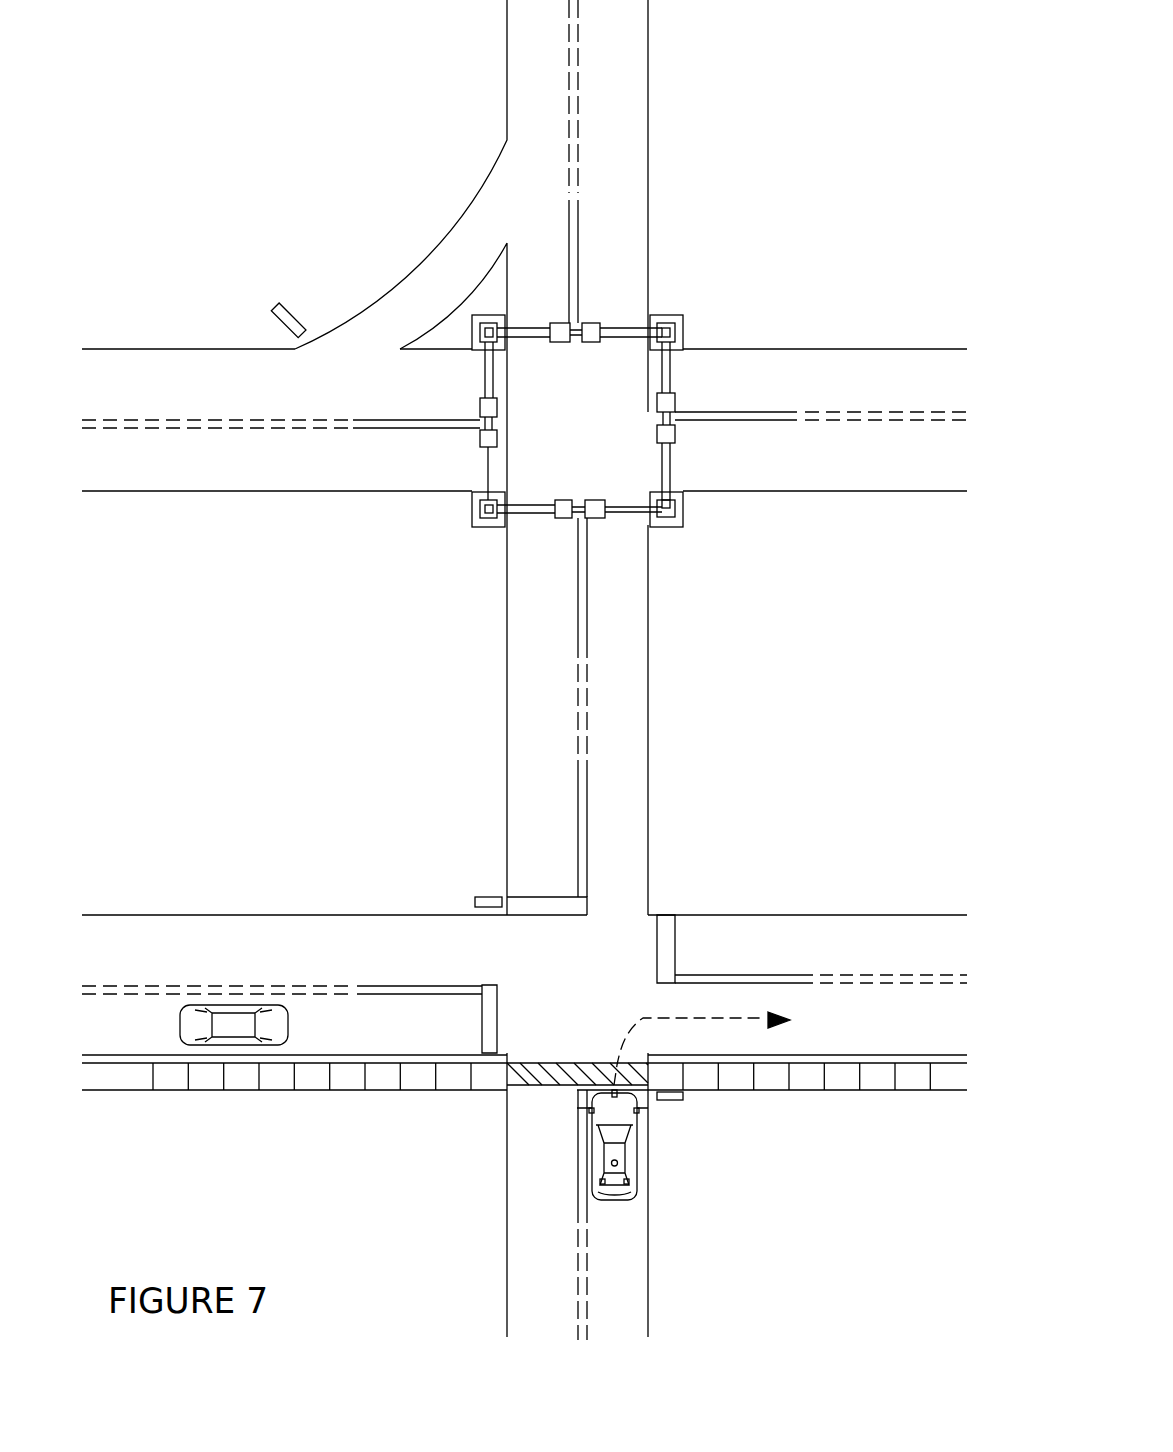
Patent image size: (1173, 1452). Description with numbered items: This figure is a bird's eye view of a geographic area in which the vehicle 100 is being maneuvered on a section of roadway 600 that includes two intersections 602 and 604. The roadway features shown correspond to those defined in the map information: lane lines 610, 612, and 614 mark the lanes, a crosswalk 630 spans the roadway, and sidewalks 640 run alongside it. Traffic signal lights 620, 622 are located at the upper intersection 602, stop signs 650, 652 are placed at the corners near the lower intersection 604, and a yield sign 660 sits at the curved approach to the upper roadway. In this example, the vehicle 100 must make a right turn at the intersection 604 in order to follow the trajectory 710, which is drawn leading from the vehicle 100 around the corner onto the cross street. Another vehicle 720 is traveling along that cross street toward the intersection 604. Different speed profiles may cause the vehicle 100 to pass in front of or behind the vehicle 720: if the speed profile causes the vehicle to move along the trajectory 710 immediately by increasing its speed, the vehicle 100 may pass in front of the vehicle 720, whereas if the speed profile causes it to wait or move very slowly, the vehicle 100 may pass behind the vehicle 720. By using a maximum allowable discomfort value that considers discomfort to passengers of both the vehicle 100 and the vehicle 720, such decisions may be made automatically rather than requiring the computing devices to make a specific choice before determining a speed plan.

The vehicle 100 is at (639, 1198).
The section of roadway 600 is at (208, 1260).
The intersection 602 is at (524, 421).
The intersection 604 is at (577, 1037).
The lane line 610 is at (160, 993).
The lane line 612 is at (240, 1055).
The lane line 614 is at (578, 103).
The traffic signal light 620 is at (480, 435).
The traffic signal light 622 is at (478, 402).
The crosswalk 630 is at (503, 1071).
The sidewalk 640 is at (805, 1063).
The stop sign 650 is at (490, 893).
The stop sign 652 is at (683, 1097).
The yield sign 660 is at (273, 318).
The trajectory 710 is at (700, 1018).
The vehicle 720 is at (232, 1005).